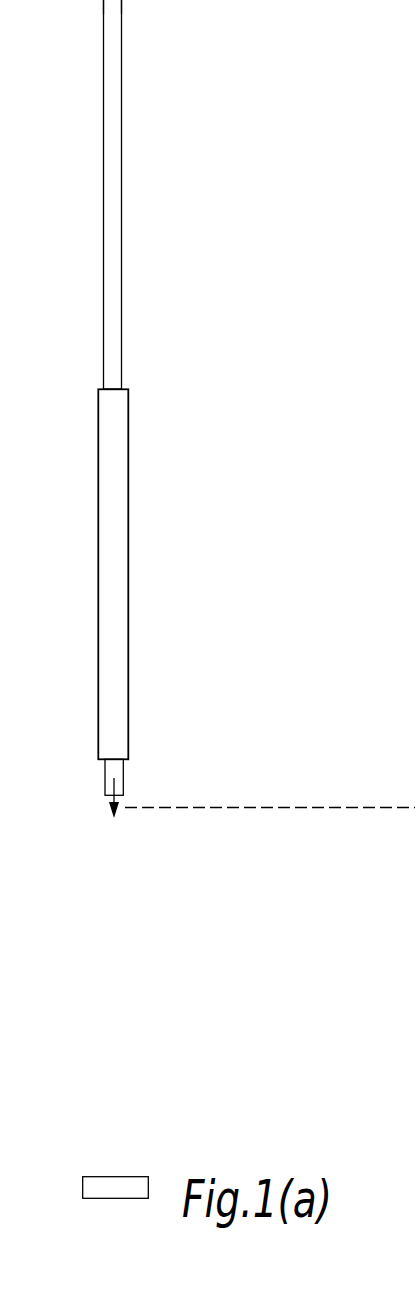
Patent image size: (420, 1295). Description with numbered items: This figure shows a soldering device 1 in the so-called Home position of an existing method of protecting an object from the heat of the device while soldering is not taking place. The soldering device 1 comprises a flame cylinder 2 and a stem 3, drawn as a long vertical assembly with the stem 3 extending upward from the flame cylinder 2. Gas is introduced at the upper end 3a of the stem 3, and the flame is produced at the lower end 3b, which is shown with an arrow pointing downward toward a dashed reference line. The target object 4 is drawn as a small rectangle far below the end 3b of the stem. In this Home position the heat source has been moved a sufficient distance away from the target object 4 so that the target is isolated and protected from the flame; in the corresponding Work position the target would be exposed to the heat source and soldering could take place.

The soldering device 1 is at (90, 482).
The flame cylinder 2 is at (117, 631).
The stem 3 is at (117, 217).
The other end of the stem 3a is at (110, 10).
The one end of the stem 3b is at (106, 788).
The target object 4 is at (118, 1181).